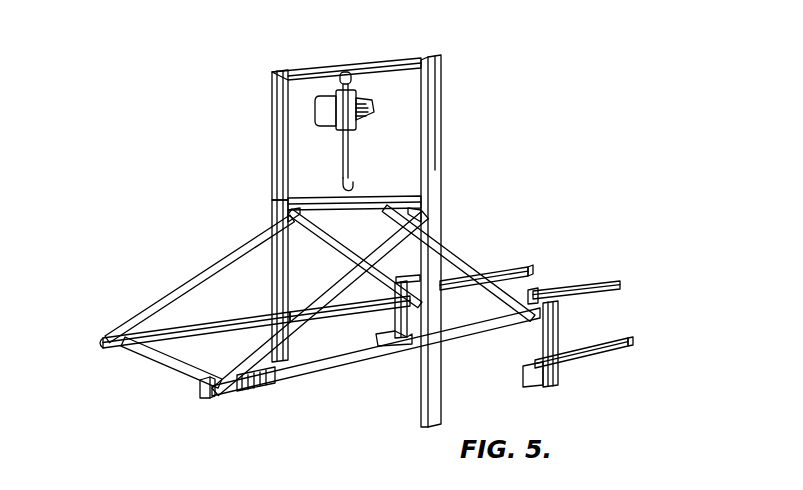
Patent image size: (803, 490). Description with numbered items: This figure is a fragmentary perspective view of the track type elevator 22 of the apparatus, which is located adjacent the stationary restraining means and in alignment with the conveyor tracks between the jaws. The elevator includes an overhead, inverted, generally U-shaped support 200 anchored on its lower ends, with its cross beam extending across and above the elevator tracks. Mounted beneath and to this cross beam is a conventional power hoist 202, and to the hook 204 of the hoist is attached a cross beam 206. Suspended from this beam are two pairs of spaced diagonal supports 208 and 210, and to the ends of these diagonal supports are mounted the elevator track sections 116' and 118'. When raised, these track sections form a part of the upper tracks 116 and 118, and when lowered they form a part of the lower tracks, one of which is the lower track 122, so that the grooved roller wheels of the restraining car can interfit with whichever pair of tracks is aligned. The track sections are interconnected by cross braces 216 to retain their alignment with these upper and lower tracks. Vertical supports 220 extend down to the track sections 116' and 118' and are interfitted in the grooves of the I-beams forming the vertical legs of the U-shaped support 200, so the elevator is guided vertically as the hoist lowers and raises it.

The track type elevator 22 is at (408, 52).
The U-shaped support 200 is at (437, 108).
The power hoist 202 is at (341, 71).
The hook 204 is at (343, 178).
The cross beam 206 is at (372, 198).
The diagonal supports 208 is at (237, 250).
The diagonal supports 210 is at (366, 266).
The vertical supports 220 is at (275, 265).
The upper track 116 is at (411, 283).
The elevator track section 116' is at (161, 330).
The upper track 118 is at (578, 316).
The elevator track section 118' is at (237, 397).
The cross braces 216 is at (160, 362).
The lower track 122 is at (618, 346).